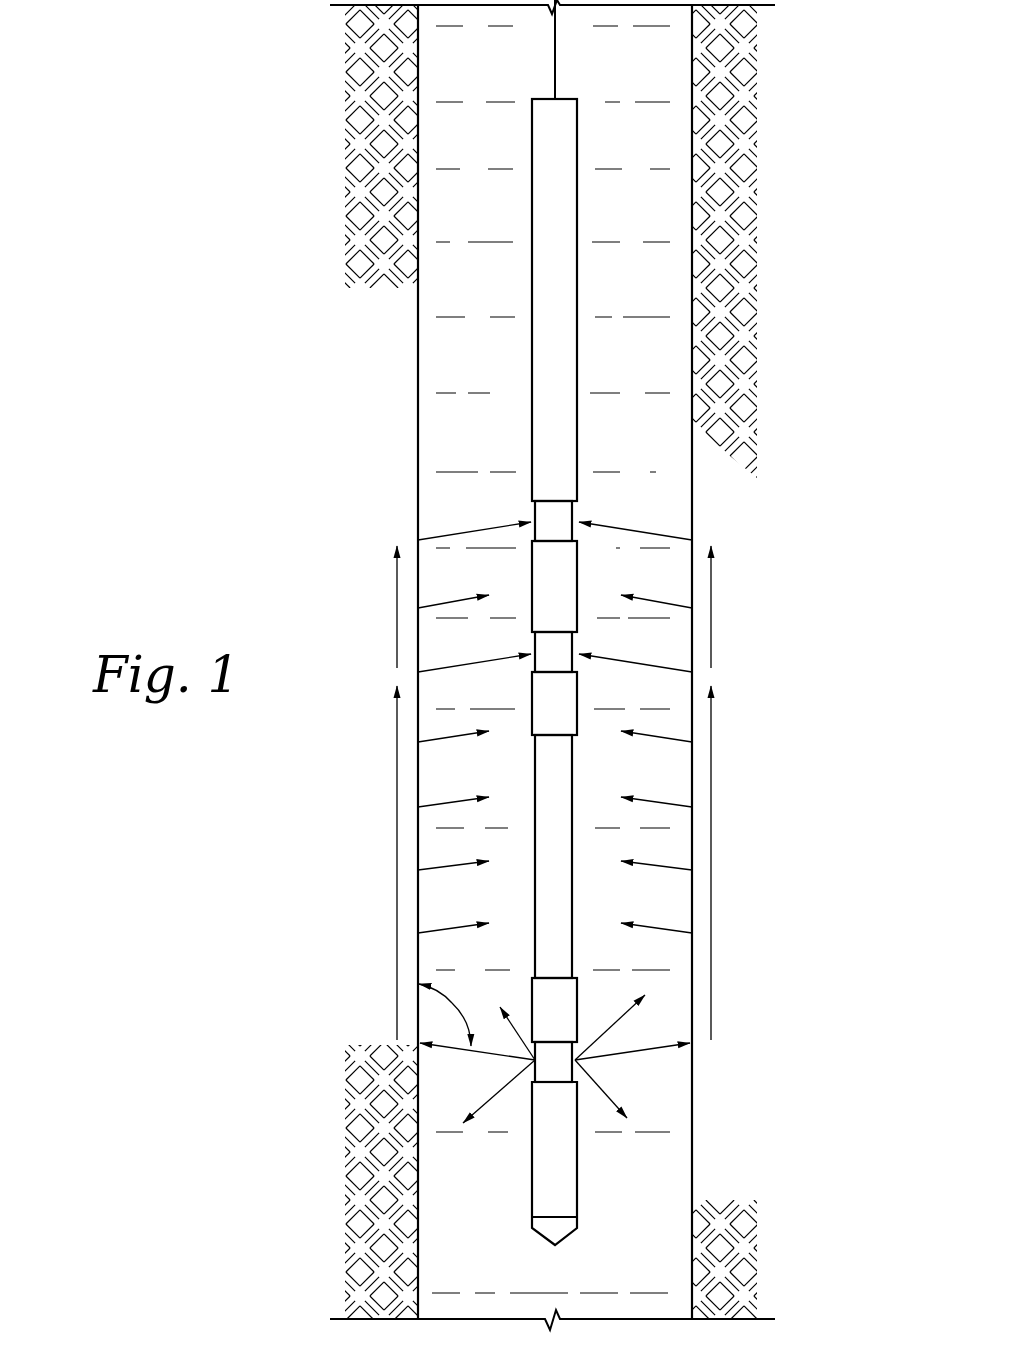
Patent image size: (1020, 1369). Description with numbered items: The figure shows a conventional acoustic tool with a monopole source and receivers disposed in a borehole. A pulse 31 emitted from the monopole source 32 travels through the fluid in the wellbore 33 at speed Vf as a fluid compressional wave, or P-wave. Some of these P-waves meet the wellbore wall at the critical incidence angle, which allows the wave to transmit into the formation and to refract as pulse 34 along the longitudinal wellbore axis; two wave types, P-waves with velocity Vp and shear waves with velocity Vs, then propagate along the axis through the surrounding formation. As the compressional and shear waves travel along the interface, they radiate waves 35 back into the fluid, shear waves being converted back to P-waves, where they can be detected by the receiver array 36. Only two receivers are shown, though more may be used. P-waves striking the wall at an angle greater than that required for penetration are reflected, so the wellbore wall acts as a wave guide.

The pulse 31 is at (461, 1050).
The monopole source 32 is at (556, 1067).
The wellbore 33 is at (644, 222).
The refracted pulse 34 is at (395, 857).
The radiated waves 35 is at (490, 528).
The receiver array 36 is at (556, 524).